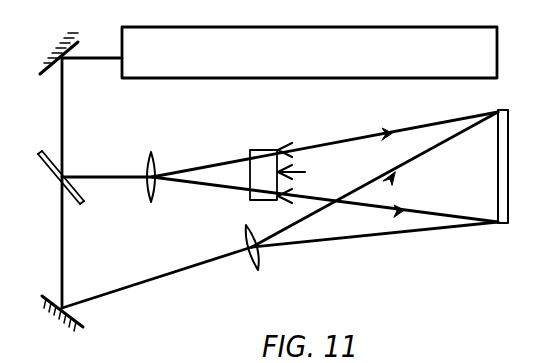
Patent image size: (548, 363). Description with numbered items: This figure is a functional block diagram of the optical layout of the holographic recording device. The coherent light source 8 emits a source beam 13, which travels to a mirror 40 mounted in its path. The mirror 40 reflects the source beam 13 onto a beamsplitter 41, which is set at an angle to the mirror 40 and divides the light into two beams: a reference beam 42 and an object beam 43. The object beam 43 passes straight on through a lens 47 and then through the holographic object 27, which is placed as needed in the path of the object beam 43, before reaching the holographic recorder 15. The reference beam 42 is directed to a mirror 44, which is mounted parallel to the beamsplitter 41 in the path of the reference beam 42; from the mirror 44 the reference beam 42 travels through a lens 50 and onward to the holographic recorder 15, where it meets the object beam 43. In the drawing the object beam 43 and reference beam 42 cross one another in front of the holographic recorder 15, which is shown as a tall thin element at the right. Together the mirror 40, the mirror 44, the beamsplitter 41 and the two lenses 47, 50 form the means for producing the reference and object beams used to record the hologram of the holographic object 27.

The coherent light source 8 is at (370, 33).
The source beam 13 is at (63, 80).
The holographic recorder 15 is at (509, 157).
The holographic object 27 is at (265, 167).
The mirror 40 is at (56, 46).
The beamsplitter 41 is at (50, 172).
The reference beam 42 is at (61, 250).
The object beam 43 is at (110, 178).
The mirror 44 is at (60, 316).
The lens 47 is at (156, 172).
The lens 50 is at (249, 256).